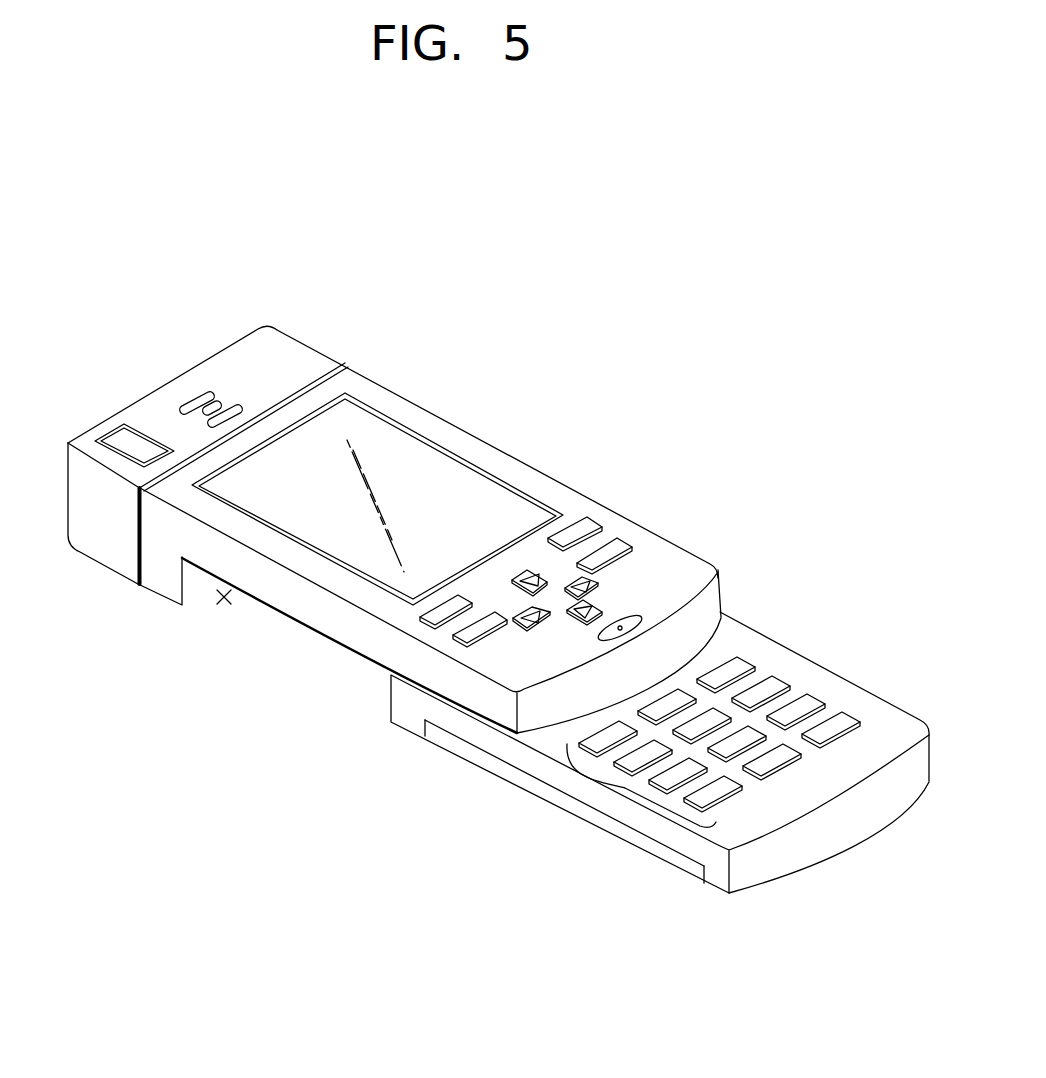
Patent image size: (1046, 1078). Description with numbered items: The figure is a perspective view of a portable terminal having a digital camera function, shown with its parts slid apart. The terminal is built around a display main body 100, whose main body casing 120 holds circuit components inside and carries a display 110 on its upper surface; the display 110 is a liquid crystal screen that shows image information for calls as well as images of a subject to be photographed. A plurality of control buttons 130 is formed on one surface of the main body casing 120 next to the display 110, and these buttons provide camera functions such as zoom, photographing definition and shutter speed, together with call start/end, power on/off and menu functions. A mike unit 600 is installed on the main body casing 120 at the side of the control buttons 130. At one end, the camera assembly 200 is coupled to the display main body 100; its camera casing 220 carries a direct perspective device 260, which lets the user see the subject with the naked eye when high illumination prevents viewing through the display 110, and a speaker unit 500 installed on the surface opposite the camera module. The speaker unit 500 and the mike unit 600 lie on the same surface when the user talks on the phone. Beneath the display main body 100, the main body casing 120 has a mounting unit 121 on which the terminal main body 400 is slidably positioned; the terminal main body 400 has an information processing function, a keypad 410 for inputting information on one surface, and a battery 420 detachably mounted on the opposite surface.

The display main body 100 is at (503, 441).
The display 110 is at (417, 460).
The main body casing 120 is at (383, 396).
The mounting unit 121 is at (227, 608).
The control buttons 130 is at (612, 520).
The camera assembly 200 is at (313, 332).
The camera casing 220 is at (261, 340).
The direct perspective device 260 is at (132, 437).
The terminal main body 400 is at (839, 669).
The keypad 410 is at (628, 788).
The battery 420 is at (665, 860).
The speaker unit 500 is at (213, 393).
The mike unit 600 is at (622, 623).